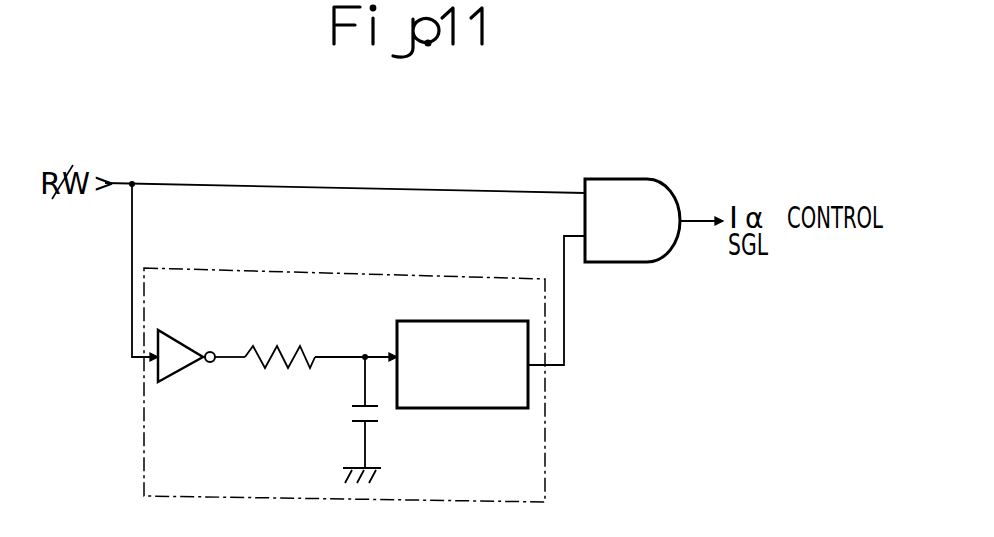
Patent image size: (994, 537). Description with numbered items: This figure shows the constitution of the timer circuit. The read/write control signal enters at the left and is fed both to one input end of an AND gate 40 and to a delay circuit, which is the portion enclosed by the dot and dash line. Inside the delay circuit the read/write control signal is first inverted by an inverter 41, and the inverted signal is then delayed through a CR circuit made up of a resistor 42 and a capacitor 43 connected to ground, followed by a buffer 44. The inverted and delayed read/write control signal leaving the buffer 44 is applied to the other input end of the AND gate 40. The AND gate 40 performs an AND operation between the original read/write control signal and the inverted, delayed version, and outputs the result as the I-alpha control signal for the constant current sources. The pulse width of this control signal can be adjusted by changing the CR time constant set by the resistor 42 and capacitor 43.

The AND gate 40 is at (645, 190).
The inverter 41 is at (178, 365).
The resistor 42 is at (282, 347).
The capacitor 43 is at (362, 437).
The buffer 44 is at (476, 406).